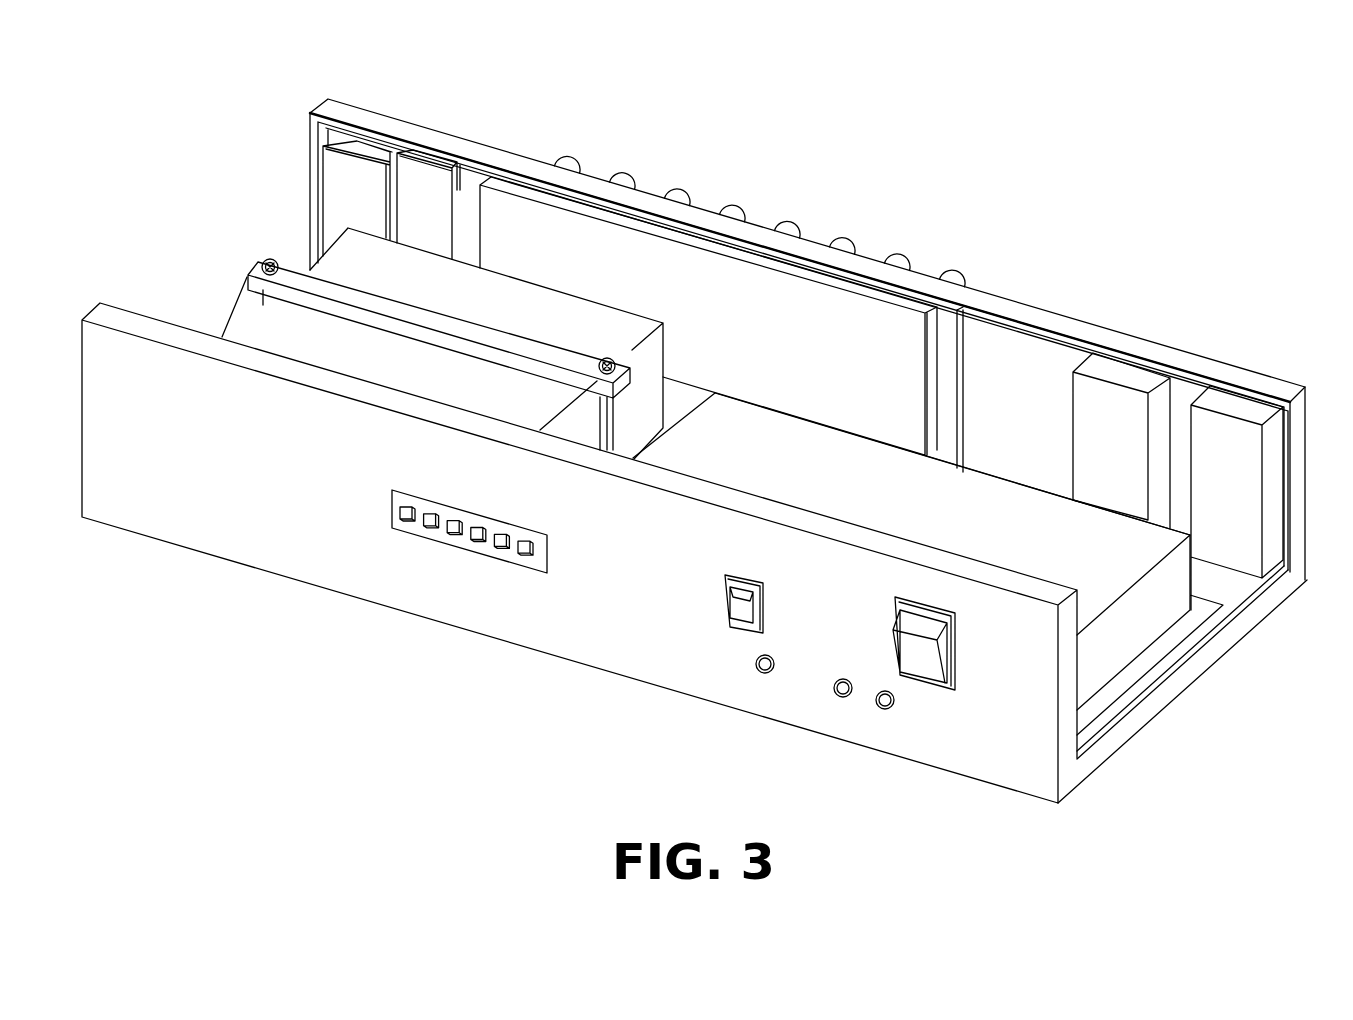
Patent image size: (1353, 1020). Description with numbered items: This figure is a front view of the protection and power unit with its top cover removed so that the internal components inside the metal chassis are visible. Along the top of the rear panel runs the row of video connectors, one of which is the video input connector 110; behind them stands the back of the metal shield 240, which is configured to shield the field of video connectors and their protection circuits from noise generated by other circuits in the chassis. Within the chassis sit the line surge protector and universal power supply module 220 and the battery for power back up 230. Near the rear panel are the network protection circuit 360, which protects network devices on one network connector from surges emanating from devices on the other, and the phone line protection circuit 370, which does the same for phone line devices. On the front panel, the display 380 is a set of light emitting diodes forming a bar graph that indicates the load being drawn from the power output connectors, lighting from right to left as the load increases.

The video input connector 110 is at (578, 152).
The line surge protector and universal power supply module 220 is at (1120, 635).
The battery for power back up 230 is at (267, 330).
The metal shield 240 is at (718, 290).
The network protection circuit 360 is at (415, 198).
The phone line protection circuit 370 is at (342, 163).
The display 380 is at (442, 537).